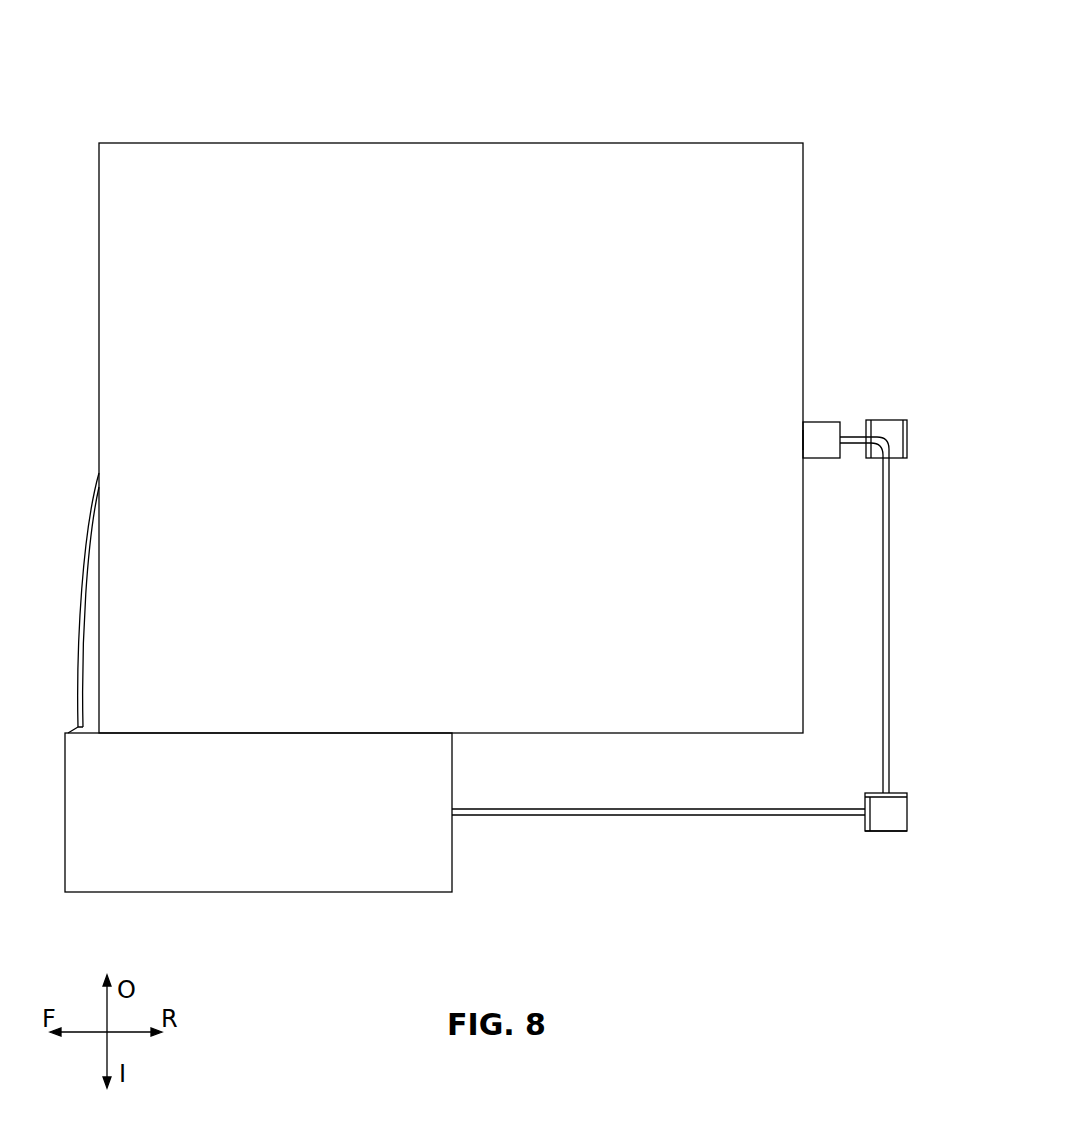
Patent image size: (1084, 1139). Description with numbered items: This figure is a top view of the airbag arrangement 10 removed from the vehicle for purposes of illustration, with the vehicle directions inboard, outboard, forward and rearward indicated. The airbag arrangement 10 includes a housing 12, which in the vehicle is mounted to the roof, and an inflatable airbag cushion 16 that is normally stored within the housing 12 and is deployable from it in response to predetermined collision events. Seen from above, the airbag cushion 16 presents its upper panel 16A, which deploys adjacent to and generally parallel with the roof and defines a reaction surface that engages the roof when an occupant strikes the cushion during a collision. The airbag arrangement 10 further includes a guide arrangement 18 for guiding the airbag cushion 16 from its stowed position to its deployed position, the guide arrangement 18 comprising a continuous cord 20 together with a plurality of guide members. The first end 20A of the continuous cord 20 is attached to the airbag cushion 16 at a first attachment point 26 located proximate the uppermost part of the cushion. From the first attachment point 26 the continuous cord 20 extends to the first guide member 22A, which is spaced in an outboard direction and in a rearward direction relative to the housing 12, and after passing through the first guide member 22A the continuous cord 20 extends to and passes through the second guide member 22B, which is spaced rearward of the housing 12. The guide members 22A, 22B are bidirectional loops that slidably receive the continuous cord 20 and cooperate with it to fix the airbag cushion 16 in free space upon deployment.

The airbag arrangement 10 is at (120, 56).
The housing 12 is at (117, 892).
The inflatable airbag cushion 16 is at (283, 143).
The upper panel 16A is at (474, 450).
The guide arrangement 18 is at (892, 840).
The continuous cord 20 is at (889, 600).
The first end 20A is at (822, 421).
The first guide member 22A is at (890, 420).
The second guide member 22B is at (908, 811).
The first attachment point 26 is at (803, 440).